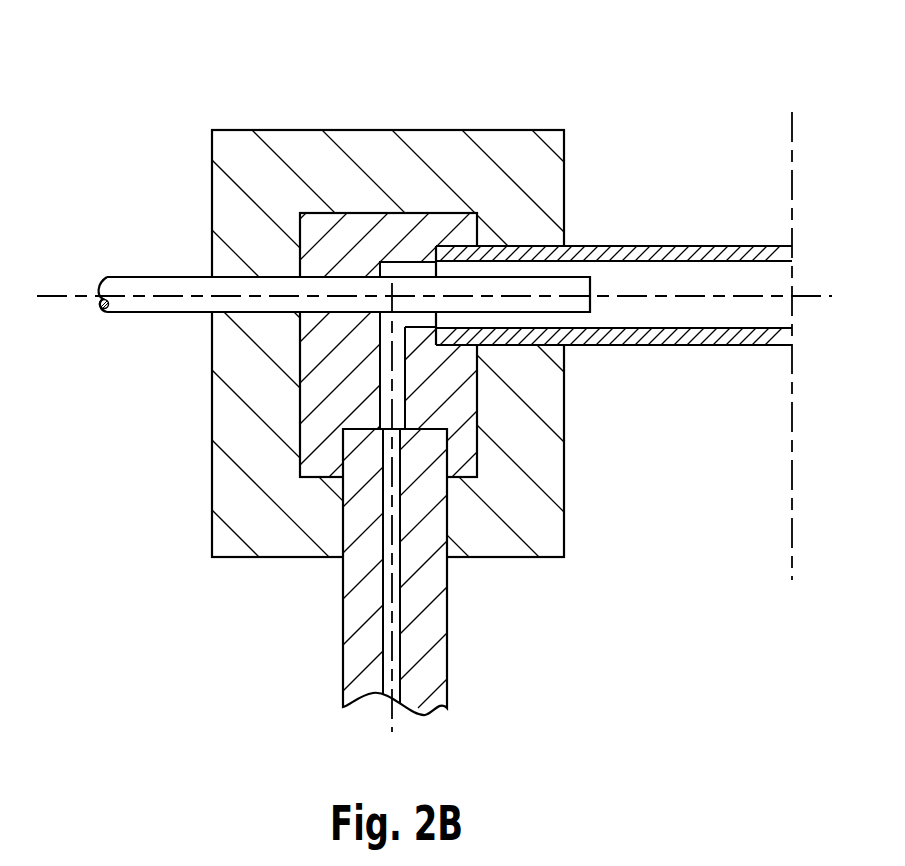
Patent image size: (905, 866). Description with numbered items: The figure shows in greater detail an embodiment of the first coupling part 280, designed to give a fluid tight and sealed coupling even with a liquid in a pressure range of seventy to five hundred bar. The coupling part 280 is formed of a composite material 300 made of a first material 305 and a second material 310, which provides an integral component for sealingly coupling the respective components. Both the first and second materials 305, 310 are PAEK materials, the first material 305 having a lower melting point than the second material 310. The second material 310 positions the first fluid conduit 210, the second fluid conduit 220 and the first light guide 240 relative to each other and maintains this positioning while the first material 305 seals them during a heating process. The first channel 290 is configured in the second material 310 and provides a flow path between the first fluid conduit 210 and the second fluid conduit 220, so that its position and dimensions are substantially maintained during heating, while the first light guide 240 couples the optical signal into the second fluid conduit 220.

The first fluid conduit 210 is at (435, 642).
The second fluid conduit 220 is at (655, 338).
The first light guide 240 is at (567, 287).
The first coupling part 280 is at (563, 92).
The first channel 290 is at (398, 405).
The composite material 300 is at (250, 115).
The first material 305 is at (280, 547).
The second material 310 is at (362, 222).